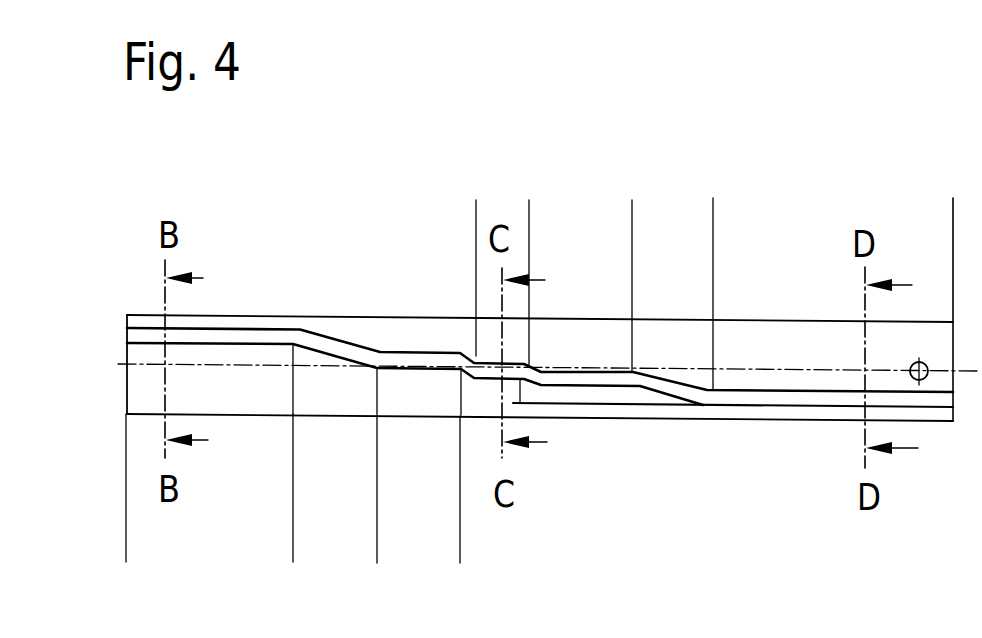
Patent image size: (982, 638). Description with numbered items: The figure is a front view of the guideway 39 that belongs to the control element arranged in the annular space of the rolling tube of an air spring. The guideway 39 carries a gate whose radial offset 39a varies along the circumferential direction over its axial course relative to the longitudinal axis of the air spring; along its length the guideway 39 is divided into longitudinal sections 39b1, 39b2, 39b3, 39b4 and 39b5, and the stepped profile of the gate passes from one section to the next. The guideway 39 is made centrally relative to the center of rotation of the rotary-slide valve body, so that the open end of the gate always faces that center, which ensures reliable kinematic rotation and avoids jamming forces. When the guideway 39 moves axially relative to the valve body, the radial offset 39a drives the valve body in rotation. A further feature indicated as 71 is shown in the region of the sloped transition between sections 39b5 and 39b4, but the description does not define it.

The guideway 39 is at (630, 378).
The radial offset 39a is at (523, 388).
The longitudinal section 39b1 is at (458, 200).
The longitudinal section 39b2 is at (614, 200).
The longitudinal section 39b3 is at (935, 205).
The longitudinal section 39b4 is at (460, 557).
The longitudinal section 39b5 is at (293, 553).
The sloped transition portion 71 is at (337, 512).